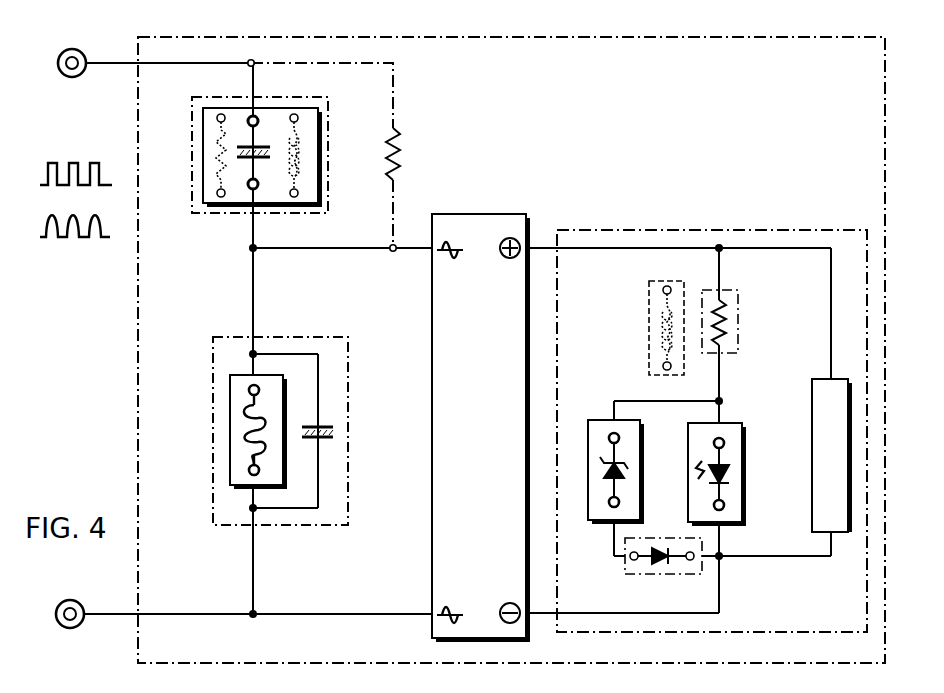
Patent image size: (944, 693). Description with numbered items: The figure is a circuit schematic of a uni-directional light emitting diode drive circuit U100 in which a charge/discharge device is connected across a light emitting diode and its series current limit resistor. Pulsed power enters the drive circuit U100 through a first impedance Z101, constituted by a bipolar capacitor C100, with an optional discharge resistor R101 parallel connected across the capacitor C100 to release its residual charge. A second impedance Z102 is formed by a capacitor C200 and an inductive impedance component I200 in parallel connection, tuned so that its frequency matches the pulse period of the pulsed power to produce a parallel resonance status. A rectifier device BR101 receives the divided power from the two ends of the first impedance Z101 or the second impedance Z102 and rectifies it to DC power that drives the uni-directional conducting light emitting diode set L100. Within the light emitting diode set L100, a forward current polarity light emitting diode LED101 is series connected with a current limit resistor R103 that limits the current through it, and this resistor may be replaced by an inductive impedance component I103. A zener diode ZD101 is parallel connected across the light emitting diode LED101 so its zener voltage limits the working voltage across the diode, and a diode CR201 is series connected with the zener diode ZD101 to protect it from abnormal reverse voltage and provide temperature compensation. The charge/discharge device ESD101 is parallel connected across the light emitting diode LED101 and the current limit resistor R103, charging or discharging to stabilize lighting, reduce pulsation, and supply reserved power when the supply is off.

The uni-directional light emitting diode drive circuit U100 is at (137, 415).
The first impedance Z101 is at (239, 166).
The capacitor C100 is at (243, 160).
The discharge resistor R101 is at (430, 154).
The second impedance Z102 is at (286, 417).
The inductive impedance component I200 is at (245, 432).
The capacitor C200 is at (325, 422).
The rectifier device BR101 is at (492, 213).
The uni-directional conducting light emitting diode set L100 is at (661, 230).
The inductive impedance component I103 is at (648, 312).
The current limit resistor R103 is at (740, 318).
The charge/discharge device ESD101 is at (810, 427).
The zener diode ZD101 is at (588, 463).
The light emitting diode LED101 is at (745, 497).
The diode CR201 is at (663, 570).